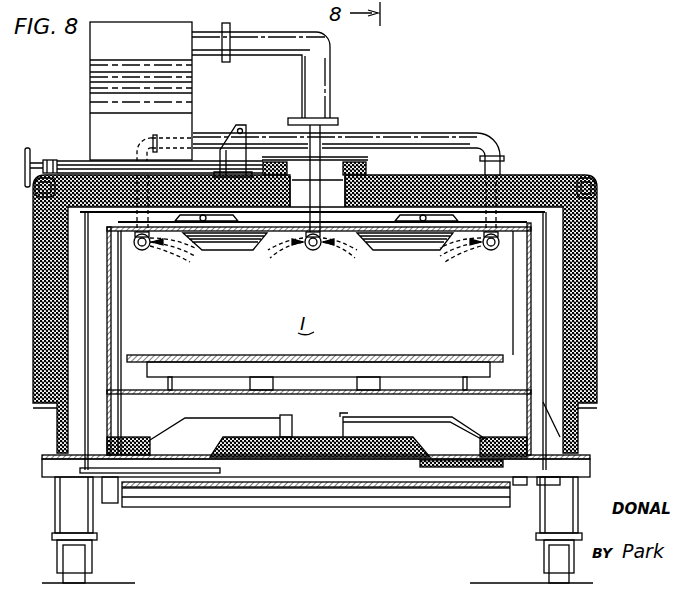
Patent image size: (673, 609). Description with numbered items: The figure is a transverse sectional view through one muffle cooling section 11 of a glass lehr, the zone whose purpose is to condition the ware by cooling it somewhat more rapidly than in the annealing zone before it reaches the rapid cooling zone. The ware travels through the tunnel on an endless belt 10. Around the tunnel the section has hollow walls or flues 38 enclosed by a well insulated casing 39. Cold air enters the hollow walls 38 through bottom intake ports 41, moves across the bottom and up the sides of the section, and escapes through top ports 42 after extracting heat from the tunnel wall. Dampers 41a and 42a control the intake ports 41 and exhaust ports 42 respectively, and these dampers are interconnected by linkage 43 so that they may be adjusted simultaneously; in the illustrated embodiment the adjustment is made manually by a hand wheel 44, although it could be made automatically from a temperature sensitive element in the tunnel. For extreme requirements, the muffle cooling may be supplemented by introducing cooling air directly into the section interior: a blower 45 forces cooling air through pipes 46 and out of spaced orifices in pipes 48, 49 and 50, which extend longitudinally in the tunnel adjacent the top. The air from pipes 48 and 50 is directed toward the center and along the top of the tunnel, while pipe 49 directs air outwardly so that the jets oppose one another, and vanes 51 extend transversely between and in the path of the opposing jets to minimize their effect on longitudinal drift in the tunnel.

The endless belt 10 is at (255, 342).
The muffle cooling section 11 is at (612, 213).
The hollow walls or flues 38 is at (553, 248).
The insulated casing 39 is at (517, 190).
The bottom intake ports 41 is at (278, 432).
The intake dampers 41a is at (177, 466).
The top ports 42 is at (356, 192).
The exhaust dampers 42a is at (352, 163).
The linkage 43 is at (543, 295).
The hand wheel 44 is at (30, 148).
The blower 45 is at (105, 53).
The pipes 46 is at (288, 21).
The pipe 48 is at (142, 252).
The pipe 49 is at (308, 252).
The pipe 50 is at (487, 250).
The vanes 51 is at (240, 245).